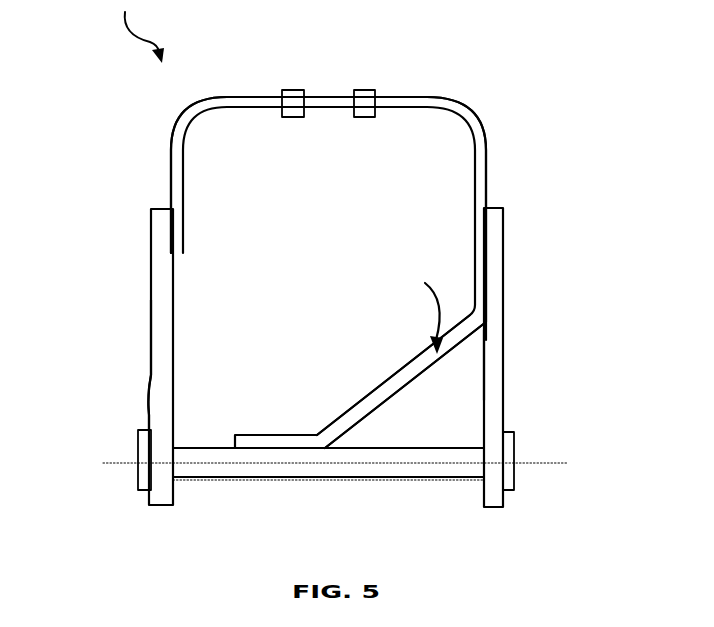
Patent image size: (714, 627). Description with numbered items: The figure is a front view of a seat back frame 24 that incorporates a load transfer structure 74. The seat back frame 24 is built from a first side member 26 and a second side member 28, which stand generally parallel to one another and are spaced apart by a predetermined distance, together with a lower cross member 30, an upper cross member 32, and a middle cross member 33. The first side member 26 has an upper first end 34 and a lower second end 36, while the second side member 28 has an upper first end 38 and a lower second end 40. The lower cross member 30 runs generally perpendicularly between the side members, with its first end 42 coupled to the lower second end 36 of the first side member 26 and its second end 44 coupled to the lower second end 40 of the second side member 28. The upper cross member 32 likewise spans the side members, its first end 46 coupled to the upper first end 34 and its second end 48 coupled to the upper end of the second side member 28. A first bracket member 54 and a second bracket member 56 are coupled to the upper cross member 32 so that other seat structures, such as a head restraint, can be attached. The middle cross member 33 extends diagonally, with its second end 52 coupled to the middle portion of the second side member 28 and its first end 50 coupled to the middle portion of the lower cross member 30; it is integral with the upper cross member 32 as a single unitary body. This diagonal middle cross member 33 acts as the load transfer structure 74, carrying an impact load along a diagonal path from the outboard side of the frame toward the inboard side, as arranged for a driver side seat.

The seat back frame 24 is at (140, 31).
The first side member 26 is at (165, 330).
The second side member 28 is at (487, 354).
The lower cross member 30 is at (377, 462).
The upper cross member 32 is at (398, 97).
The middle cross member 33 is at (383, 390).
The first end of the first side member 34 is at (153, 232).
The second end of the first side member 36 is at (150, 505).
The first end of the second side member 38 is at (487, 219).
The second end of the second side member 40 is at (497, 508).
The first end of the lower cross member 42 is at (200, 472).
The second end of the lower cross member 44 is at (473, 472).
The first end of the upper cross member 46 is at (181, 160).
The second end of the upper cross member 48 is at (487, 156).
The first end of the middle cross member 50 is at (295, 435).
The second end of the middle cross member 52 is at (465, 331).
The first bracket member 54 is at (290, 114).
The second bracket member 56 is at (362, 114).
The load transfer structure 74 is at (422, 307).